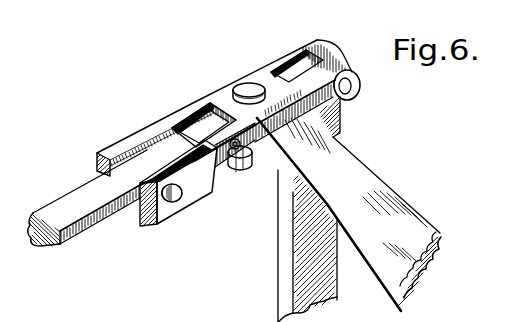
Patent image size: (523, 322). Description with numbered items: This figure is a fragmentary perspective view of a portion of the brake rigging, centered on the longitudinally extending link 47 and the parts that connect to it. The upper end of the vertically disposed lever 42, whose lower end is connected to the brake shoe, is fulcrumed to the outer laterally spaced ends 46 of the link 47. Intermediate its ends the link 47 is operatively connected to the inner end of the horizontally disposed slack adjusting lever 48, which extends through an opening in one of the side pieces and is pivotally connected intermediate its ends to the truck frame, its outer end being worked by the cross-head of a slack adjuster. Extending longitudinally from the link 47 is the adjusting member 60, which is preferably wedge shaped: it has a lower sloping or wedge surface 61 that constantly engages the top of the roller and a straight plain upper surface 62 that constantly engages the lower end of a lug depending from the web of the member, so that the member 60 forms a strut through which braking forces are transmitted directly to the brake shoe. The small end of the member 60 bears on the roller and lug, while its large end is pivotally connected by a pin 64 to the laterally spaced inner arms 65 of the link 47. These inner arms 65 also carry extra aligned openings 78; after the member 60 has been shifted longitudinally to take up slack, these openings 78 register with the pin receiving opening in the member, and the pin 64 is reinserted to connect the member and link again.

The lever 42 is at (288, 307).
The outer laterally spaced ends 46 is at (287, 55).
The link 47 is at (193, 103).
The slack adjusting lever 48 is at (357, 190).
The adjusting member 60 is at (70, 242).
The lower sloping or wedge surface 61 is at (103, 230).
The upper surface 62 is at (196, 128).
The pin 64 is at (240, 165).
The inner arms 65 is at (108, 152).
The extra aligned openings 78 is at (157, 223).